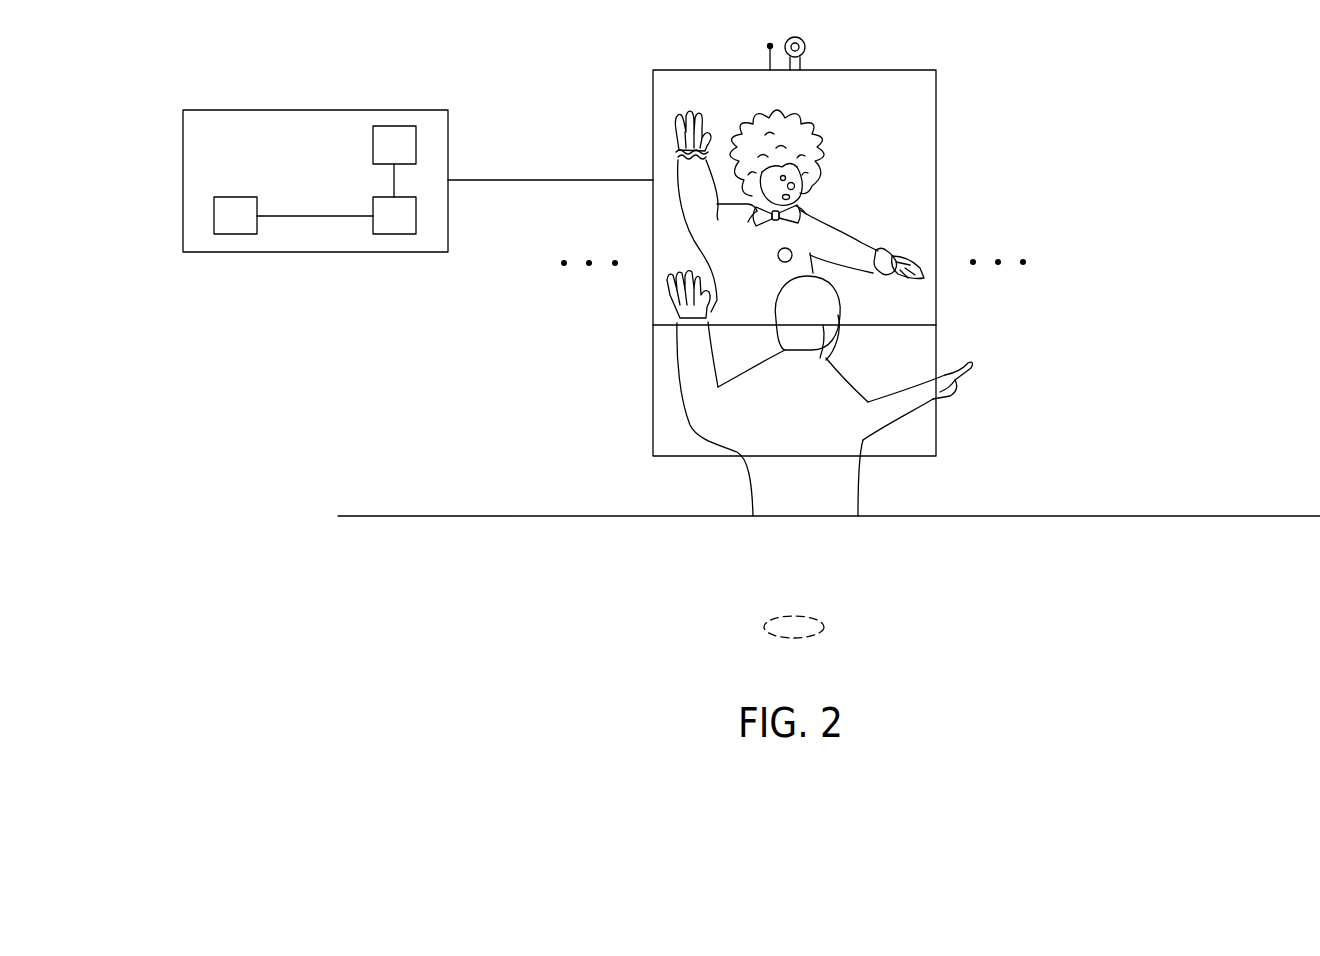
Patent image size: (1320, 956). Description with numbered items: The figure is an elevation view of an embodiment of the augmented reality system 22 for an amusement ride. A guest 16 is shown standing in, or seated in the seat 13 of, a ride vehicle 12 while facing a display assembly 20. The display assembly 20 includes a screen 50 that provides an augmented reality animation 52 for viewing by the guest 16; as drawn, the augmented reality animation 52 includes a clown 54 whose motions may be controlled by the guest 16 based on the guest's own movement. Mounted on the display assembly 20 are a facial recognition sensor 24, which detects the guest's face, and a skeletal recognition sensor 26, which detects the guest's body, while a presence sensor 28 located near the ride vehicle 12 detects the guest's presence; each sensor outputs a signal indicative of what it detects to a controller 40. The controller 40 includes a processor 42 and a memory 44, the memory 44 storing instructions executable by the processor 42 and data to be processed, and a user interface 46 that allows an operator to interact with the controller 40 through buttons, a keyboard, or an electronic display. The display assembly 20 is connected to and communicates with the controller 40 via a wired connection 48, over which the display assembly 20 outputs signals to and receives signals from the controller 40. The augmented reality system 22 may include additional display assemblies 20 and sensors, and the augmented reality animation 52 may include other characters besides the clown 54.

The ride vehicle 12 is at (829, 427).
The seat 13 is at (955, 517).
The guest 16 is at (718, 480).
The display assembly 20 is at (842, 230).
The augmented reality system 22 is at (1121, 68).
The facial recognition sensor 24 is at (770, 44).
The skeletal recognition sensor 26 is at (799, 37).
The presence sensor 28 is at (793, 613).
The controller 40 is at (280, 183).
The processor 42 is at (393, 234).
The memory 44 is at (235, 234).
The user interface 46 is at (392, 126).
The wired connection 48 is at (548, 180).
The screen 50 is at (937, 168).
The augmented reality animation 52 is at (838, 221).
The clown 54 is at (858, 247).